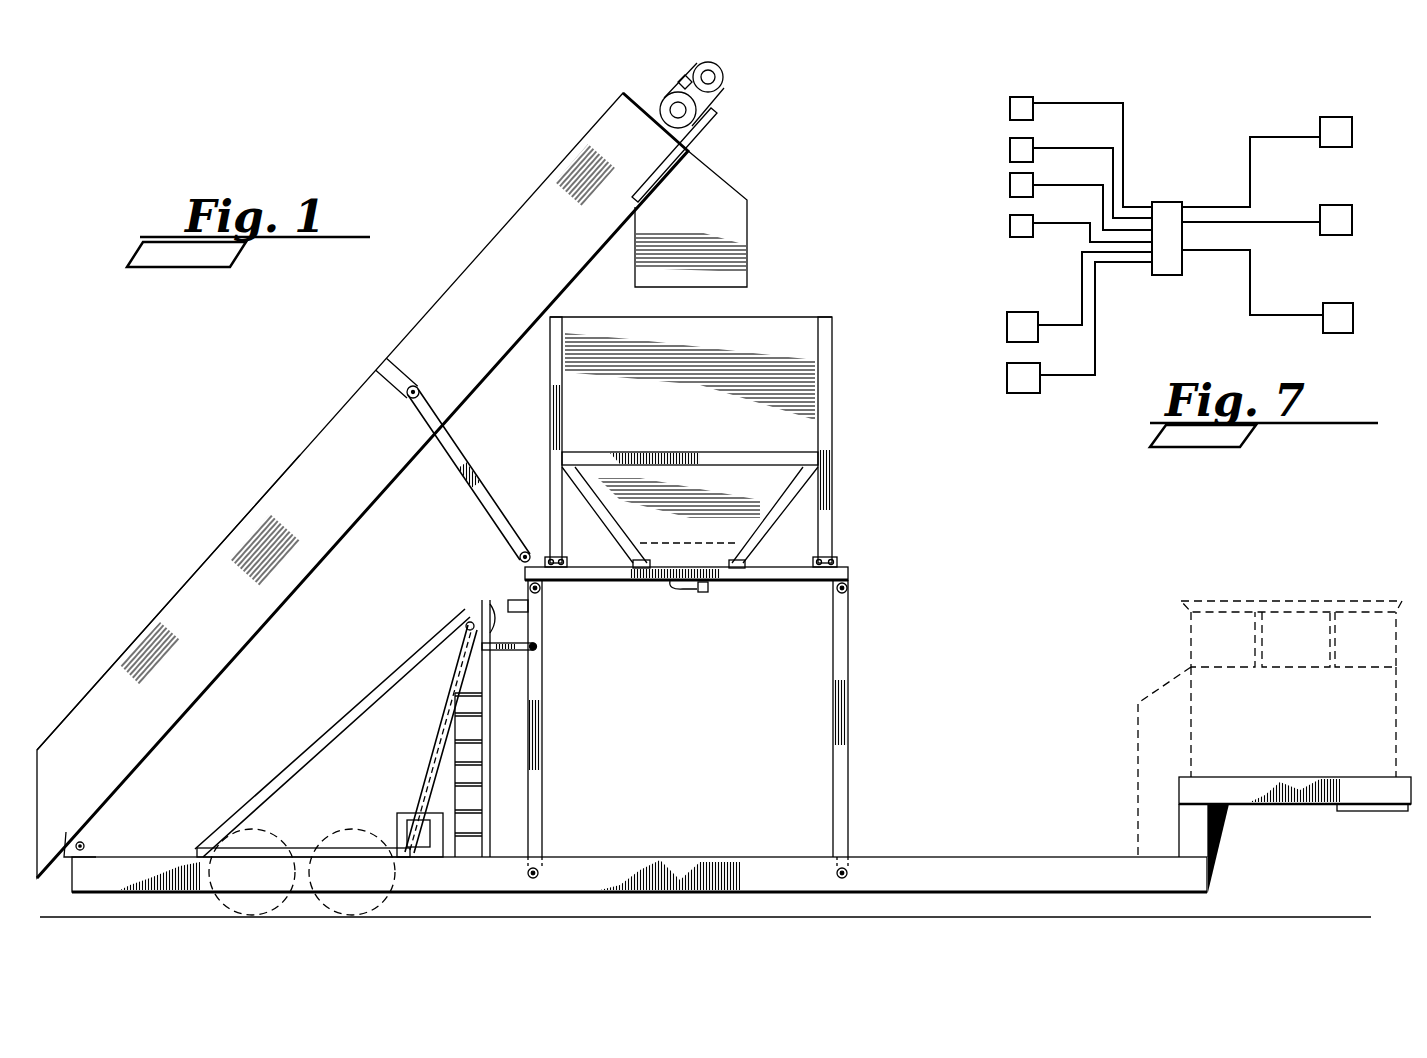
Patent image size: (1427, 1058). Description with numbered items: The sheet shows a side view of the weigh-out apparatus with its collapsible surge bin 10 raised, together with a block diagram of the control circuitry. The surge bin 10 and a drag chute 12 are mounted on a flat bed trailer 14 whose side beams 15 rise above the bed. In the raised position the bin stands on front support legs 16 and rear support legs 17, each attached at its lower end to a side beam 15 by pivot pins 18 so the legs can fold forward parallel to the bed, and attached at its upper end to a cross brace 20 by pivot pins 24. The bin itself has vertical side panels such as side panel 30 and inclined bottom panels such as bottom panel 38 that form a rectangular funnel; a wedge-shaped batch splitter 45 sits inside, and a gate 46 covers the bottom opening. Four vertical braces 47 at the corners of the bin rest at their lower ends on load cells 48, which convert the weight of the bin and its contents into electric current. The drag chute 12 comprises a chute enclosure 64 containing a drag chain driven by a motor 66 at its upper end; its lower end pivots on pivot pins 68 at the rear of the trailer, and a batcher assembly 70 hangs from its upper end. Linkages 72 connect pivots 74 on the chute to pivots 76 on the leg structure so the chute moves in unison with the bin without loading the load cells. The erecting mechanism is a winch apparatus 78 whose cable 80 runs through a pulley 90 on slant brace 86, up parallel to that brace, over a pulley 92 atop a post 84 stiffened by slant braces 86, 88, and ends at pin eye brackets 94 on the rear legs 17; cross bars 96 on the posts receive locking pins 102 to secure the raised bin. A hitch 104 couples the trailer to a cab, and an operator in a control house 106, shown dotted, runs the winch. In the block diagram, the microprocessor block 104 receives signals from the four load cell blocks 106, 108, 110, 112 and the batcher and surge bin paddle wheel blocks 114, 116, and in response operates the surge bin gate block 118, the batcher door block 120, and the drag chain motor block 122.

In FIG. 1, the surge bin 10 is at (862, 355).
In FIG. 1, the drag chute 12 is at (250, 468).
In FIG. 1, the flat bed trailer 14 is at (1095, 892).
In FIG. 1, the side beams 15 is at (983, 877).
In FIG. 1, the front support legs 16 is at (848, 732).
In FIG. 1, the rear support legs 17 is at (542, 732).
In FIG. 1, the pivot pins 18 is at (533, 880).
In FIG. 1, the cross brace 20 is at (763, 573).
In FIG. 1, the pivot pins 24 is at (540, 590).
In FIG. 1, the side panel 30 is at (783, 330).
In FIG. 1, the bottom panel 38 is at (757, 530).
In FIG. 1, the batch splitter 45 is at (722, 543).
In FIG. 1, the gate 46 is at (673, 590).
In FIG. 1, the vertical braces 47 is at (826, 400).
In FIG. 1, the load cell 48 is at (567, 563).
In FIG. 1, the chute enclosure 64 is at (177, 592).
In FIG. 1, the motor 66 is at (738, 72).
In FIG. 1, the pivot pins 68 is at (86, 845).
In FIG. 1, the batcher assembly 70 is at (730, 205).
In FIG. 1, the linkages 72 is at (470, 490).
In FIG. 1, the pivots 74 is at (414, 386).
In FIG. 1, the pivots 76 is at (519, 560).
In FIG. 1, the winch apparatus 78 is at (393, 822).
In FIG. 1, the cable 80 is at (443, 698).
In FIG. 1, the posts 84 is at (487, 807).
In FIG. 1, the slant brace 86 is at (428, 755).
In FIG. 1, the slant brace 88 is at (318, 767).
In FIG. 1, the pulley 90 is at (422, 800).
In FIG. 1, the pulley 92 is at (492, 620).
In FIG. 1, the pin eye brackets 94 is at (528, 607).
In FIG. 1, the cross bars 96 is at (507, 652).
In FIG. 1, the locking pins 102 is at (535, 647).
In FIG. 1, the hitch / control circuit microprocessor 104 is at (1375, 812).
In FIG. 7, the hitch / control circuit microprocessor 104 is at (1166, 202).
In FIG. 1, the control house / load cell block 106 is at (1340, 586).
In FIG. 7, the control house / load cell block 106 is at (1010, 112).
In FIG. 7, the load cell block 108 is at (1010, 155).
In FIG. 7, the load cell block 110 is at (1010, 190).
In FIG. 7, the load cell block 112 is at (1010, 232).
In FIG. 7, the batcher paddle wheel block 114 is at (1007, 327).
In FIG. 7, the surge bin paddle wheel block 116 is at (1007, 380).
In FIG. 7, the surge bin gate block 118 is at (1352, 130).
In FIG. 7, the batcher door block 120 is at (1352, 218).
In FIG. 7, the drag chain motor block 122 is at (1353, 315).